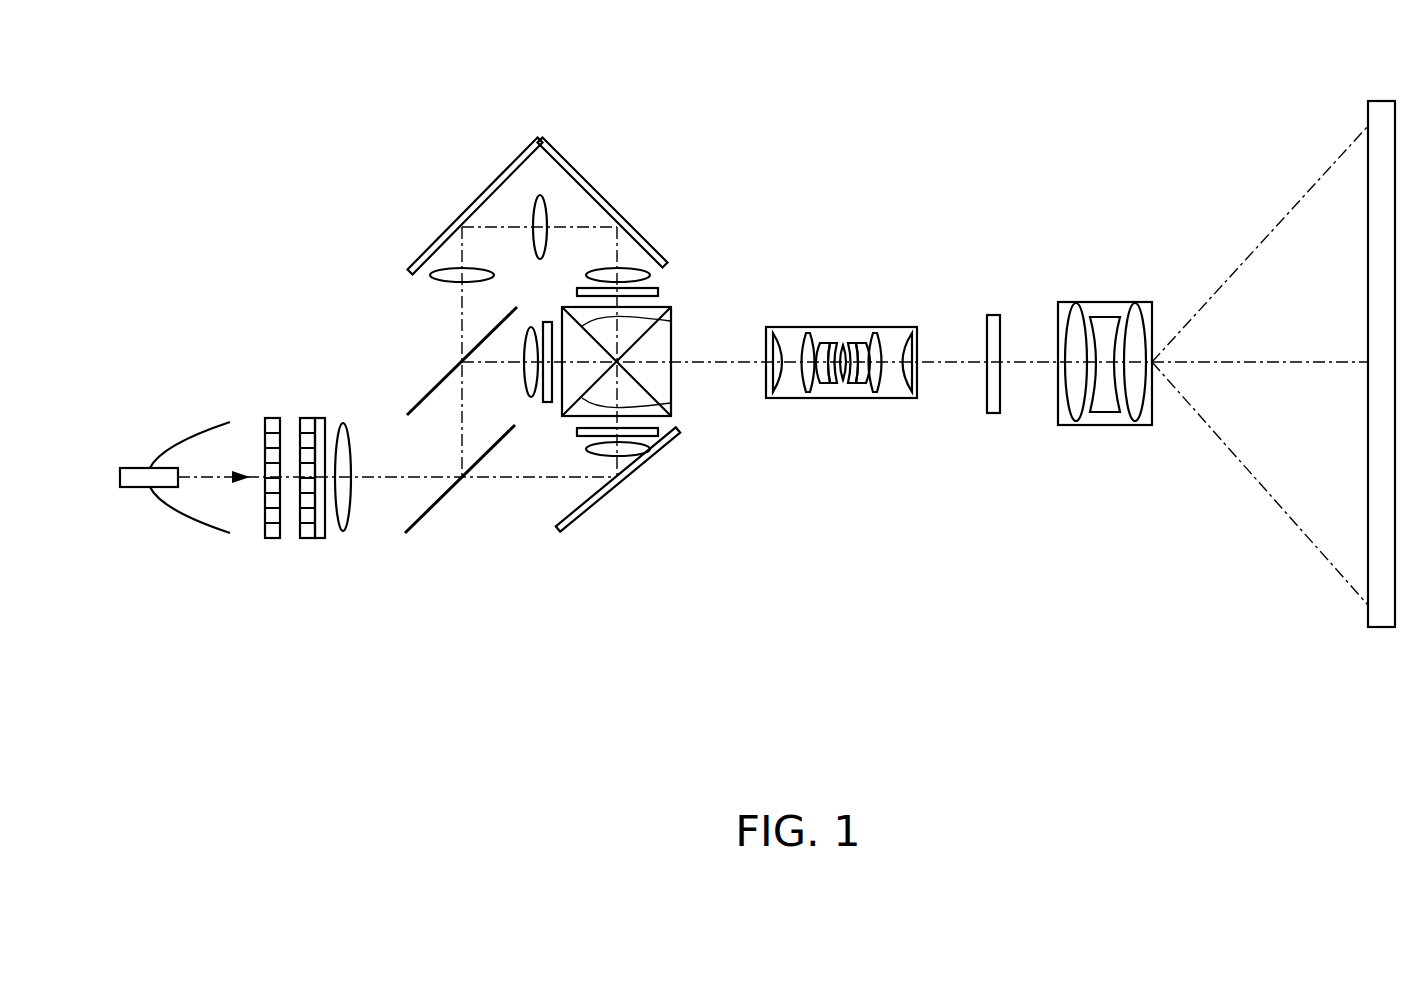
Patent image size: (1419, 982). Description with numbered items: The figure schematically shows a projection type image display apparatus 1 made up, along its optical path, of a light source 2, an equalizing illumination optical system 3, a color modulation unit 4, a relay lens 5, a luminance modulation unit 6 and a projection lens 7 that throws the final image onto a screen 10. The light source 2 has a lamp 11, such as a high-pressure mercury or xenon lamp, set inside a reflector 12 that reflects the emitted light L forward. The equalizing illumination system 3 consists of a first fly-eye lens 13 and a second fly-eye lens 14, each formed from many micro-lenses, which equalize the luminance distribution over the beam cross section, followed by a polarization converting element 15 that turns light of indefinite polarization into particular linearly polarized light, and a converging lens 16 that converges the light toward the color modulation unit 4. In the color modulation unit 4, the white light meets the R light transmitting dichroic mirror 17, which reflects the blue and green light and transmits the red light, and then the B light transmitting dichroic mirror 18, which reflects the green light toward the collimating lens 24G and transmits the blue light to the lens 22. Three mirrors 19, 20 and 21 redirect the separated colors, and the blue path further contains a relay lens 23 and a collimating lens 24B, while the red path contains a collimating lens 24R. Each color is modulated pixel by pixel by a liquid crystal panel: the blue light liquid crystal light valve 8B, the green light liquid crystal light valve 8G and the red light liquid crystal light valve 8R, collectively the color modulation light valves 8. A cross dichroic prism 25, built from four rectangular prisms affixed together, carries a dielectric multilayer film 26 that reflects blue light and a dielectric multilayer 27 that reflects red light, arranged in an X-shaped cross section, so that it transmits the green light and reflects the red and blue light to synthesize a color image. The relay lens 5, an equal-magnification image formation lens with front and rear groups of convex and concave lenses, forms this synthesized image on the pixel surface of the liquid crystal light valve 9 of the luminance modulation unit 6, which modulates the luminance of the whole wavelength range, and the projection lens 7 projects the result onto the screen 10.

The projection type image display apparatus 1 is at (838, 178).
The light source 2 is at (187, 578).
The equalizing illumination optical system 3 is at (331, 620).
The color modulation unit 4 is at (520, 612).
The relay lens 5 is at (840, 398).
The luminance modulation unit 6 is at (990, 470).
The projection lens 7 is at (1107, 300).
The color modulation light valves 8 is at (633, 382).
The green light liquid crystal light valve 8G is at (548, 321).
The blue light liquid crystal light valve 8B is at (660, 290).
The red light liquid crystal light valve 8R is at (653, 440).
The liquid crystal light valve 9 is at (993, 313).
The screen 10 is at (1381, 100).
The lamp 11 is at (135, 470).
The reflector 12 is at (202, 430).
The first fly-eye lens 13 is at (270, 540).
The second fly-eye lens 14 is at (303, 540).
The polarization converting element 15 is at (320, 540).
The converging lens 16 is at (352, 500).
The R light transmitting dichroic mirror 17 is at (428, 525).
The B light transmitting dichroic mirror 18 is at (418, 397).
The mirror 19 is at (572, 527).
The mirror 20 is at (485, 191).
The mirror 21 is at (598, 196).
The lens 22 is at (452, 281).
The relay lens 23 is at (543, 194).
The collimating lens 24B is at (631, 268).
The collimating lens 24G is at (536, 398).
The collimating lens 24R is at (628, 450).
The cross dichroic prism 25 is at (672, 340).
The dielectric multilayer film 26 is at (671, 321).
The dielectric multilayer 27 is at (671, 403).
The light beam L is at (236, 470).